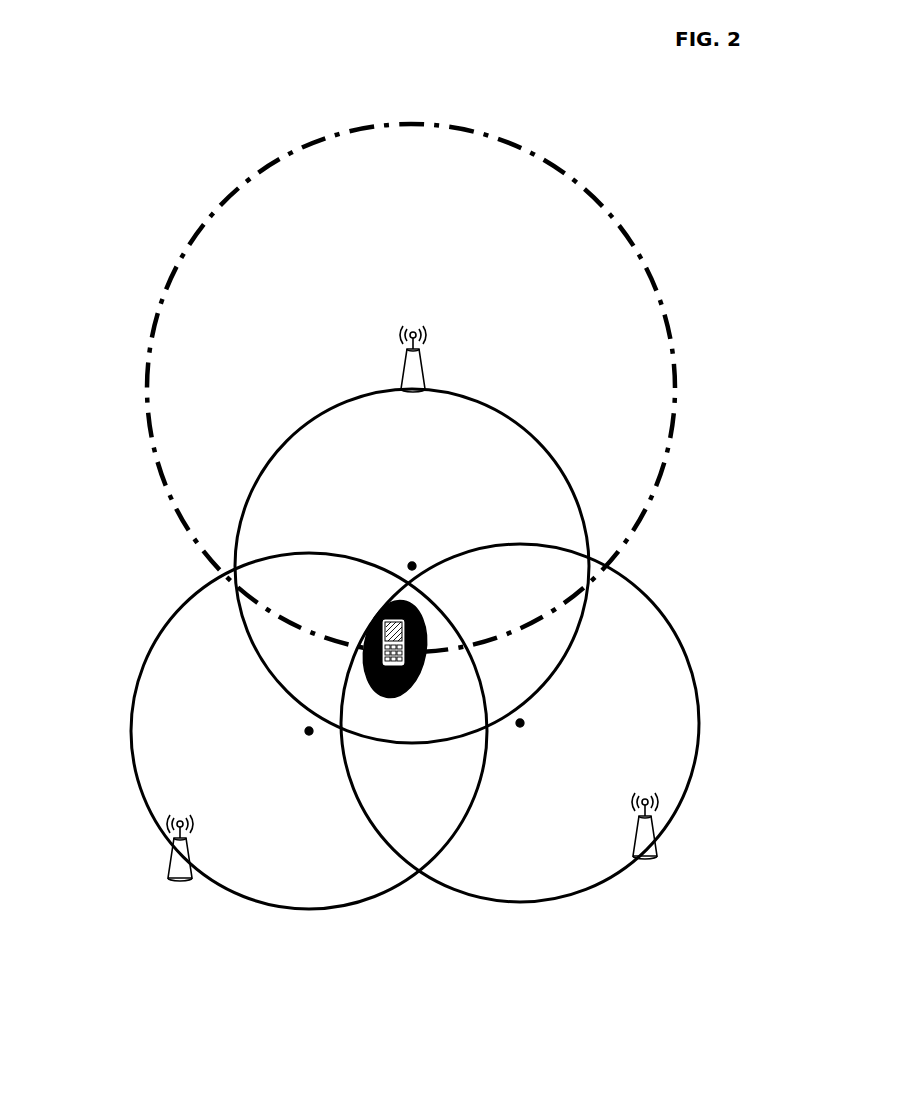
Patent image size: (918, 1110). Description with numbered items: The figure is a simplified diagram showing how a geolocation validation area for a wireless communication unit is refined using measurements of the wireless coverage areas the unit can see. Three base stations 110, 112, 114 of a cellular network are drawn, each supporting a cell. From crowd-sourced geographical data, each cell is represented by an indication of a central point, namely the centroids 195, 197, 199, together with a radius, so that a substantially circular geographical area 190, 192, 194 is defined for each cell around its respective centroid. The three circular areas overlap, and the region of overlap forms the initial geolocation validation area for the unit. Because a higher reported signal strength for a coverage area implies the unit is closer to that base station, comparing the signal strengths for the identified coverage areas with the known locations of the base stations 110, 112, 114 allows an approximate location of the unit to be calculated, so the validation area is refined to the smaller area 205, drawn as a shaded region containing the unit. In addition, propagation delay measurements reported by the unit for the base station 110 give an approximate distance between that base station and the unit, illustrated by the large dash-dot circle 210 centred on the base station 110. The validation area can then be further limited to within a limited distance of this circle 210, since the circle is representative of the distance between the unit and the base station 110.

The base station 110 is at (403, 367).
The base station 112 is at (168, 870).
The base station 114 is at (658, 850).
The circular geographical area 190 is at (282, 441).
The circular geographical area 192 is at (134, 673).
The circular geographical area 194 is at (699, 647).
The centroid 195 is at (410, 565).
The centroid 197 is at (307, 732).
The centroid 199 is at (523, 724).
The refined geolocation validation area 205 is at (414, 692).
The circle 210 is at (190, 237).